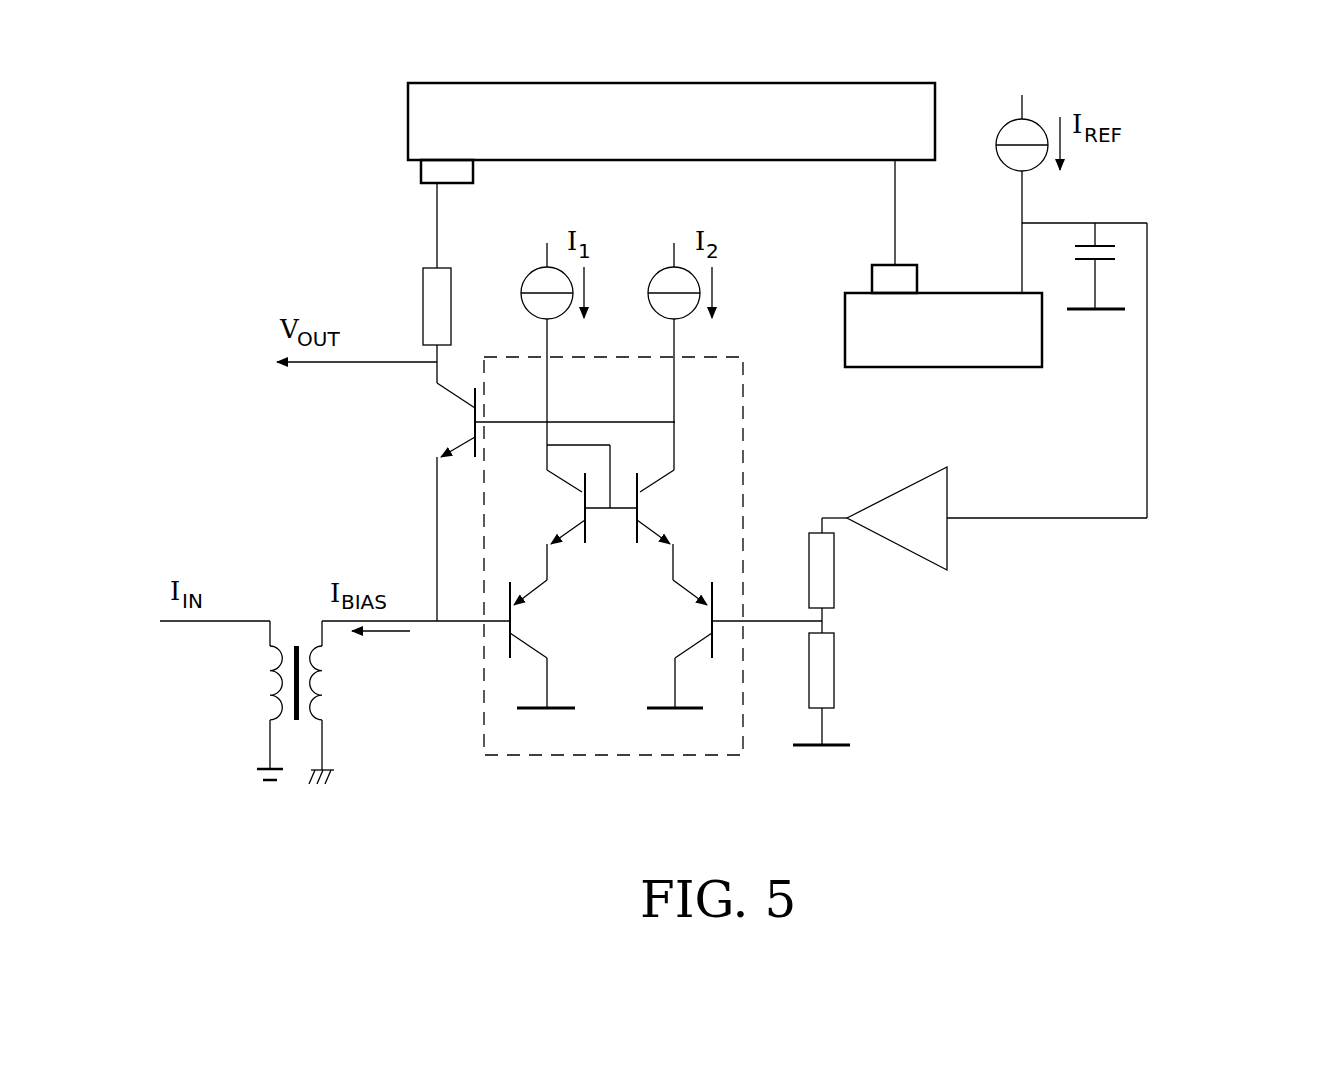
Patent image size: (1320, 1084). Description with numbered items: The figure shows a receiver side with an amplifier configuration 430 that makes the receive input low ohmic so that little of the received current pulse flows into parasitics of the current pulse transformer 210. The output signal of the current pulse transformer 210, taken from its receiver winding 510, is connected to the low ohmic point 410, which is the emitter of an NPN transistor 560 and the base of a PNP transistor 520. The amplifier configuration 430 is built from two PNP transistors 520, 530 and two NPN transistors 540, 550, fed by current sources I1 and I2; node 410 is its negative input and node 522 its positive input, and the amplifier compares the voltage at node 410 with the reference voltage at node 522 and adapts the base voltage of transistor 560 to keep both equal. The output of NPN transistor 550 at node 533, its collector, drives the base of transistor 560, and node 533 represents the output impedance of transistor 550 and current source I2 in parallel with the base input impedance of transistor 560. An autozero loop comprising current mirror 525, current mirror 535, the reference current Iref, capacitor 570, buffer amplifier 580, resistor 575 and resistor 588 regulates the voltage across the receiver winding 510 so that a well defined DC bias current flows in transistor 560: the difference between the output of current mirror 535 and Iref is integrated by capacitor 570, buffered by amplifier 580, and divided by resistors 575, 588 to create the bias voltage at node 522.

The current mirror 525 is at (671, 133).
The current mirror 535 is at (943, 263).
The capacitor 570 is at (1108, 243).
The NPN transistor 560 is at (454, 418).
The NPN transistor 540 is at (556, 489).
The NPN transistor 550 is at (663, 500).
The PNP transistor 520 is at (524, 578).
The PNP transistor 530 is at (701, 576).
The node 533 is at (607, 433).
The low ohmic point 410 is at (506, 645).
The node 522 is at (734, 645).
The amplifier configuration 430 is at (715, 756).
The current pulse transformer 210 is at (318, 655).
The current pulse transformer receiver winding 510 is at (318, 705).
The buffer amplifier 580 is at (984, 518).
The resistor 575 is at (835, 573).
The second resistor 588 is at (835, 672).